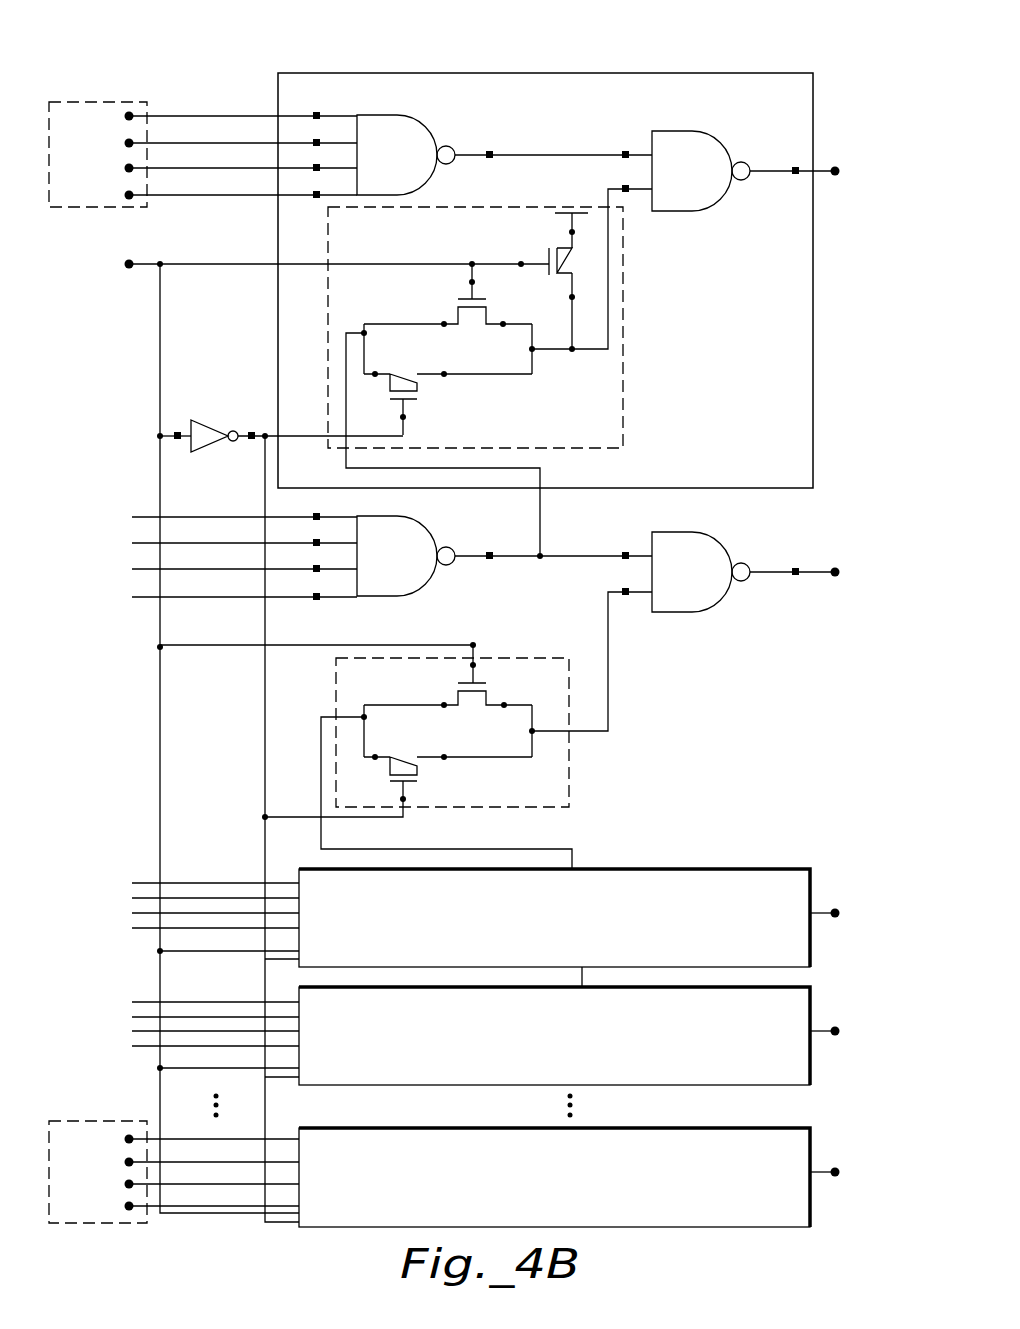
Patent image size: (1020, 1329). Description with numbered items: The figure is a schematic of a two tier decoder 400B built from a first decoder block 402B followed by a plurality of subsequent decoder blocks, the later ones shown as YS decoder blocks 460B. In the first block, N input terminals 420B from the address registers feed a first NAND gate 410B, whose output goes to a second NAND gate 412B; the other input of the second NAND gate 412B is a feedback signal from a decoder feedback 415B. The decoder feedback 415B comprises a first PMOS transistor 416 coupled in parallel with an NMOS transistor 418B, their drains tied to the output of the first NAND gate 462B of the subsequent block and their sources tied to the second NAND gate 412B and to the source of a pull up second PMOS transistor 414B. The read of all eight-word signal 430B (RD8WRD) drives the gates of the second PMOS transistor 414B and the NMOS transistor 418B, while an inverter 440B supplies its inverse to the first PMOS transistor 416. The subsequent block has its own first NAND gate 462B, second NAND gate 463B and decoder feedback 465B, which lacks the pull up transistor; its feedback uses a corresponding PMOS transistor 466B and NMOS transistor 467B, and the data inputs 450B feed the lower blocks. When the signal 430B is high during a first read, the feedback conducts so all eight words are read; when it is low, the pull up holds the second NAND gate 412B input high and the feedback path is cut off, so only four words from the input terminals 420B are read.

The two tier decoder 400B is at (172, 36).
The decoder block 402B is at (803, 97).
The first NAND gate 410B is at (384, 115).
The second NAND gate 412B is at (677, 131).
The second PMOS transistor 414B is at (560, 274).
The decoder feedback 415B is at (623, 325).
The first PMOS transistor 416 is at (418, 383).
The NMOS transistor 418B is at (532, 360).
The input terminals 420B is at (97, 102).
The read of all eight-word signal 430B is at (140, 268).
The inverter 440B is at (190, 450).
The Y-select data inputs YSD0-YSDn 450B is at (97, 1121).
The YS decoder blocks 460B is at (803, 423).
The first NAND gate 462B is at (437, 535).
The second NAND gate 463B is at (672, 613).
The decoder feedback 465B is at (520, 657).
The transistor 466B is at (418, 760).
The transistor 467B is at (518, 703).